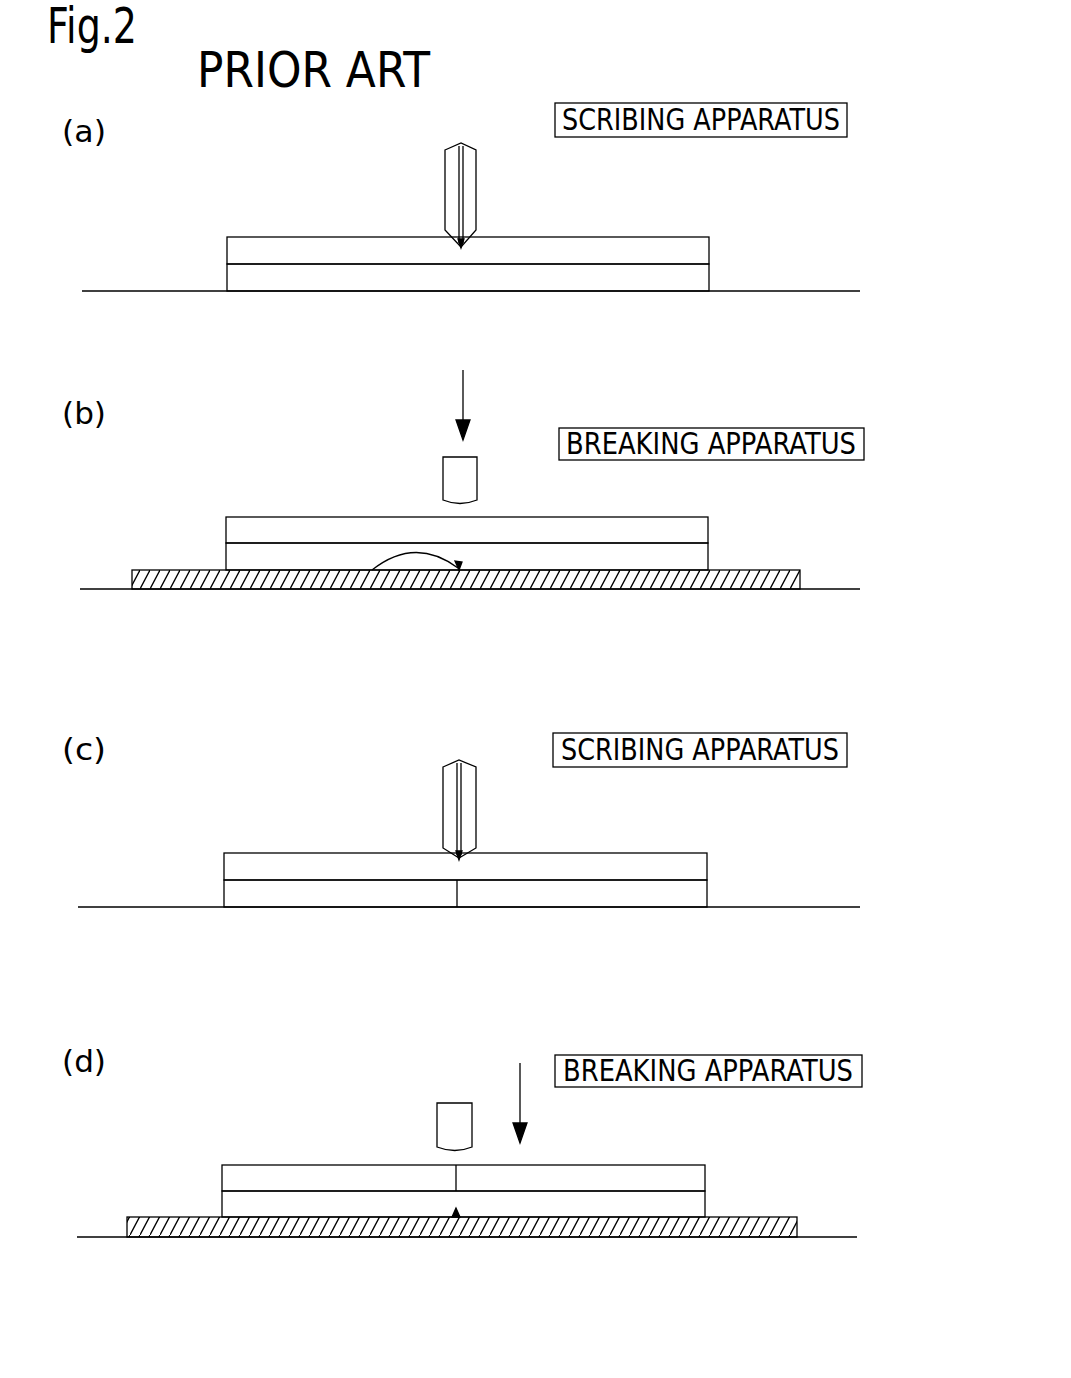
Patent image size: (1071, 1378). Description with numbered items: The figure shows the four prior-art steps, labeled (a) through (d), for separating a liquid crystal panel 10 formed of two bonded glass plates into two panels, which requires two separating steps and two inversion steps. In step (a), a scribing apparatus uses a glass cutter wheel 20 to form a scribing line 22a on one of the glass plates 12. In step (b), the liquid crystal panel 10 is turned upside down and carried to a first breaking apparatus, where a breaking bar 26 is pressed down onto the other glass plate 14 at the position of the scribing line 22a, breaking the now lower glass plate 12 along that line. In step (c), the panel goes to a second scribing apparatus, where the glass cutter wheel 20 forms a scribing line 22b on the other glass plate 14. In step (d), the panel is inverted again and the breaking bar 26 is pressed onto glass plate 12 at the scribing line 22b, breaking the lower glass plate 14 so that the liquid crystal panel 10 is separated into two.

The liquid crystal panel 10 is at (480, 688).
The glass plate 12 is at (223, 237).
The glass plate 14 is at (222, 275).
The glass cutter wheel 20 is at (432, 170).
The scribing line 22a is at (465, 245).
The scribing line 22b is at (463, 862).
The breaking bar 26 is at (432, 470).